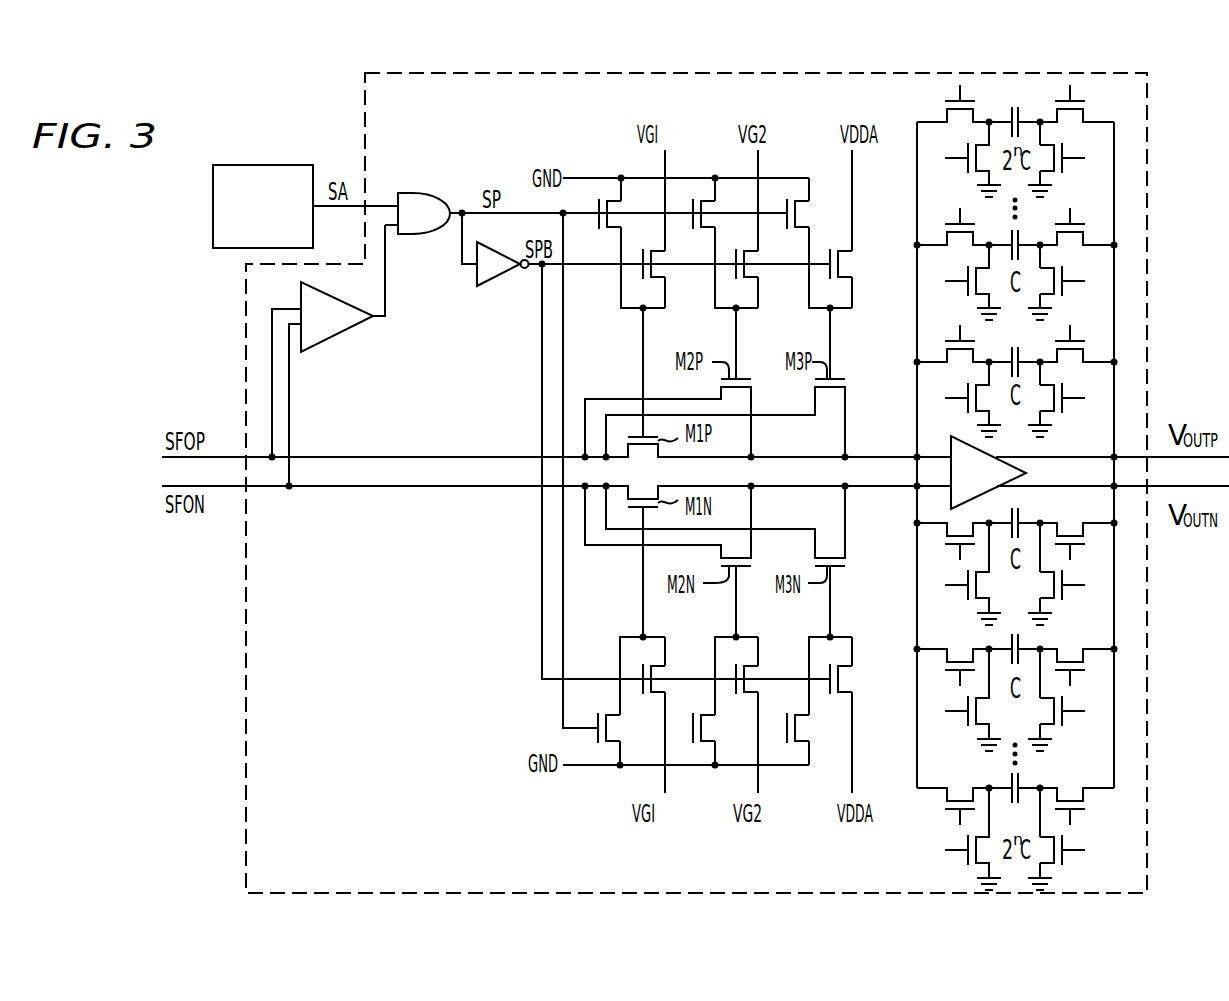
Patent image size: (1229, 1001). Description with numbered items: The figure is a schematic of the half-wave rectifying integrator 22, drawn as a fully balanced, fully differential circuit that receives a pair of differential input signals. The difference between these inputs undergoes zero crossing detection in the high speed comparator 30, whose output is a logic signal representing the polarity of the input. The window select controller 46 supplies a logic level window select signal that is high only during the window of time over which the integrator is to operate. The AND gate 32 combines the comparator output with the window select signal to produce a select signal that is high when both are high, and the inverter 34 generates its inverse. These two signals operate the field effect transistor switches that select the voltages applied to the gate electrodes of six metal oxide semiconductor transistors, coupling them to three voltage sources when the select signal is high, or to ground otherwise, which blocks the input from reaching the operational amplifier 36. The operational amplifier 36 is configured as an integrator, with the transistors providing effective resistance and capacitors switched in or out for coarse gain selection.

The half-wave rectifying integrator 22 is at (246, 587).
The comparator 30 is at (330, 338).
The AND gate 32 is at (422, 193).
The inverter 34 is at (494, 277).
The operational amplifier 36 is at (1026, 473).
The window select controller 46 is at (267, 165).